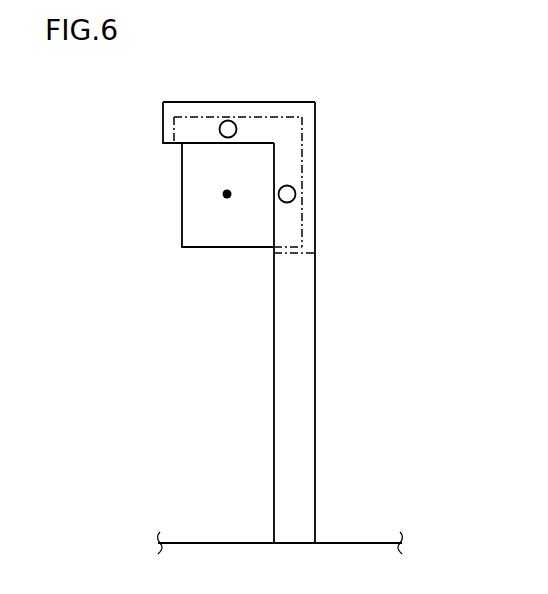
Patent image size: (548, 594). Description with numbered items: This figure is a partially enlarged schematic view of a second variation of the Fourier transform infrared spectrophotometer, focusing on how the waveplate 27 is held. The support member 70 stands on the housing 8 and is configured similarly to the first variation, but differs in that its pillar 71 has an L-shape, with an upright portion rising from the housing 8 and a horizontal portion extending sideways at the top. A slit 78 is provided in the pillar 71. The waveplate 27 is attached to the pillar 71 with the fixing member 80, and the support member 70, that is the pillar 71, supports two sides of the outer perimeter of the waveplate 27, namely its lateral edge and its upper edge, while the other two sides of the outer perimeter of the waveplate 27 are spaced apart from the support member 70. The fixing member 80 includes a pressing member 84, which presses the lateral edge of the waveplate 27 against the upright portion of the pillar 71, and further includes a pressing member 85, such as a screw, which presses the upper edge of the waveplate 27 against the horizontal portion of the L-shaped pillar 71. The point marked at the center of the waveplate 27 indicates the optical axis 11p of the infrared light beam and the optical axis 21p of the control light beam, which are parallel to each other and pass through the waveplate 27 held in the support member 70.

The housing 8 is at (350, 543).
The support member 70 is at (304, 322).
The pillar 71 is at (315, 328).
The slit 78 is at (315, 255).
The waveplate 27 is at (182, 188).
The fixing member 80 is at (301, 131).
The pressing member 84 is at (293, 188).
The pressing member 85 is at (228, 120).
The optical axis 11p is at (324, 166).
The optical axis 21p is at (231, 190).